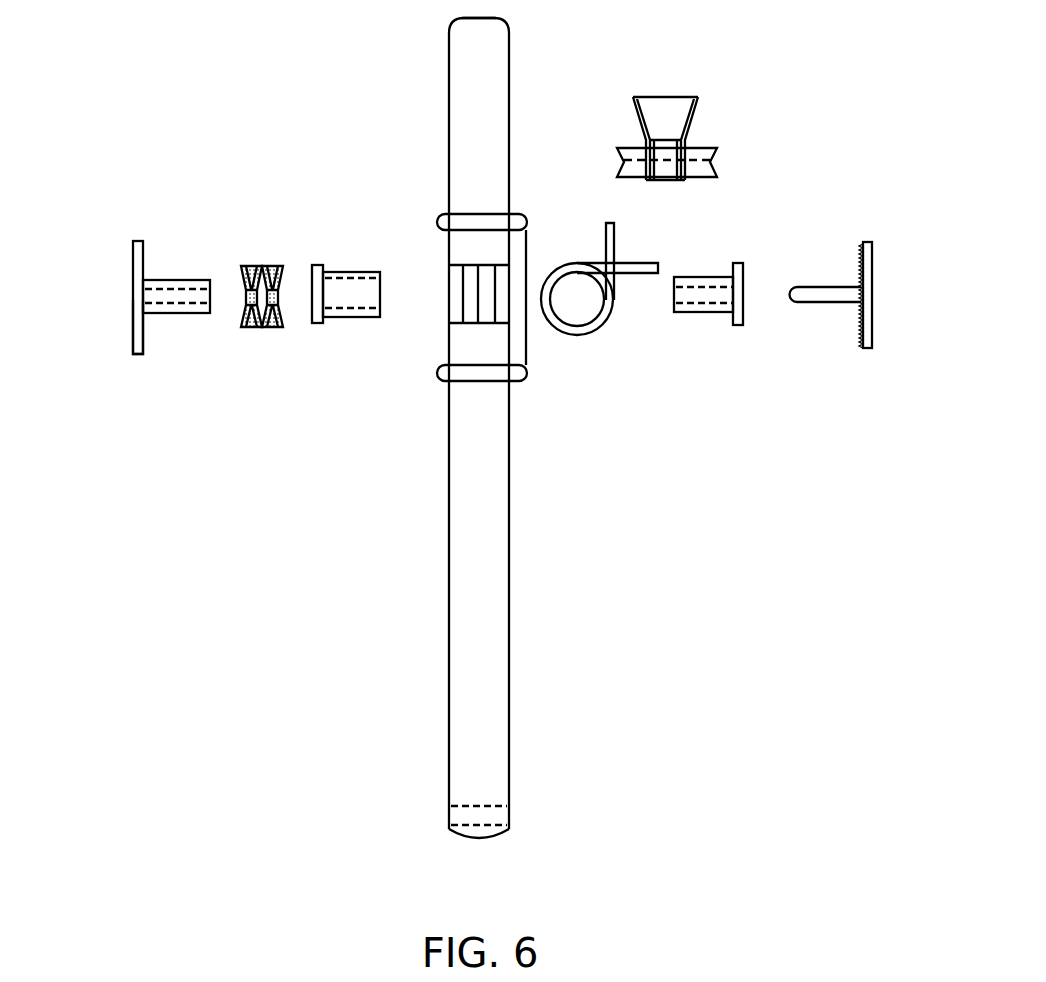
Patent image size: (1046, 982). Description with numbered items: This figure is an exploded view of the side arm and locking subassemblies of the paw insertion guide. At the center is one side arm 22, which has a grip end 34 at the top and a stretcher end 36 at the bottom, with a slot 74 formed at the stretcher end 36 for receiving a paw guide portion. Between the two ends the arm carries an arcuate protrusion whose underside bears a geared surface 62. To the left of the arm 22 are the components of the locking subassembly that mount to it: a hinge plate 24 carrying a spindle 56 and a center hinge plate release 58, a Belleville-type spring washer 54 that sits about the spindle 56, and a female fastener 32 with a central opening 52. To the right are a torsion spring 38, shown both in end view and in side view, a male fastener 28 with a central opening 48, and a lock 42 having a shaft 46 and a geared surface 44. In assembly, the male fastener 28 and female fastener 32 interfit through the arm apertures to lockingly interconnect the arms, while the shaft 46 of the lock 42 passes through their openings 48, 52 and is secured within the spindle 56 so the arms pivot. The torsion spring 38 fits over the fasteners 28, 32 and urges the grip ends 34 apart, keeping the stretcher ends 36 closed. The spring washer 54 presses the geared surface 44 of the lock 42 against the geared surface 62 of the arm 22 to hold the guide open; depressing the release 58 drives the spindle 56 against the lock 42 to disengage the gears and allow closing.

The side arm of insertion guide 22 is at (500, 775).
The grip end of side arm 34 is at (498, 38).
The stretcher end of side arm 36 is at (500, 815).
The slot for paw guide portion 74 is at (460, 818).
The geared surface of side arm 62 is at (527, 232).
The torsion spring 38 is at (585, 335).
The hinge plate release 58 is at (133, 260).
The hinge plate 24 is at (137, 354).
The spindle on hinge plate 56 is at (163, 280).
The spring 54 is at (258, 265).
The female fastener of lock subassembly 32 is at (317, 323).
The opening in female fastener 52 is at (380, 280).
The male fastener of lock subassembly 28 is at (680, 312).
The opening in male fastener 48 is at (743, 318).
The shaft of lock 46 is at (830, 287).
The lock of side arms 42 is at (872, 245).
The geared surface of lock 44 is at (860, 345).